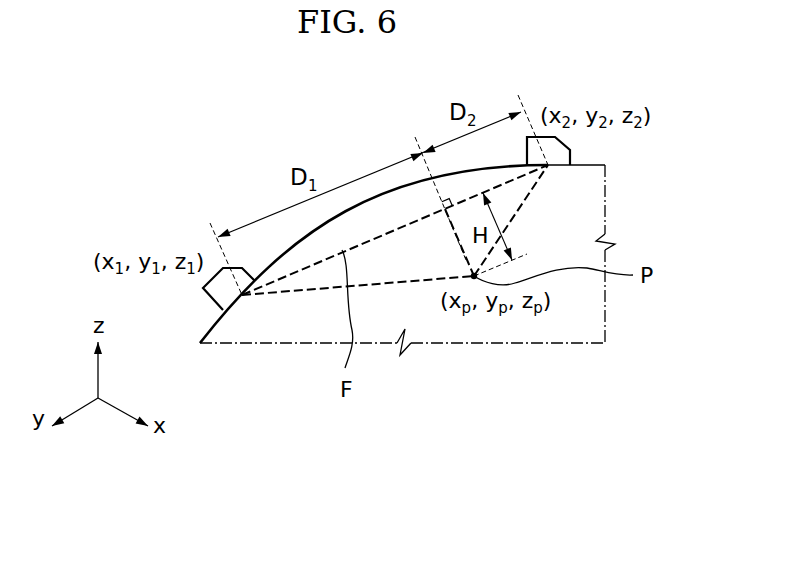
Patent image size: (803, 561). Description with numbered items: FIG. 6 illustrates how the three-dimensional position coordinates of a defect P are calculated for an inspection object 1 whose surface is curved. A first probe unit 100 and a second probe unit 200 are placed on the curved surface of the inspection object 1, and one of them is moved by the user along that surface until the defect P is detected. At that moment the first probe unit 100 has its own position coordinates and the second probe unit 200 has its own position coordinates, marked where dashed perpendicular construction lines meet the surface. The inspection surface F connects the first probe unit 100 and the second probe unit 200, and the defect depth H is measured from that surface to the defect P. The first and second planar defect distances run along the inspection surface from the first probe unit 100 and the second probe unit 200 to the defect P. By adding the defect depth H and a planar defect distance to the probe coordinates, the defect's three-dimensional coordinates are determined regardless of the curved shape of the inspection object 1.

The inspection object 1 is at (605, 212).
The first probe unit 100 is at (209, 296).
The second probe unit 200 is at (570, 150).